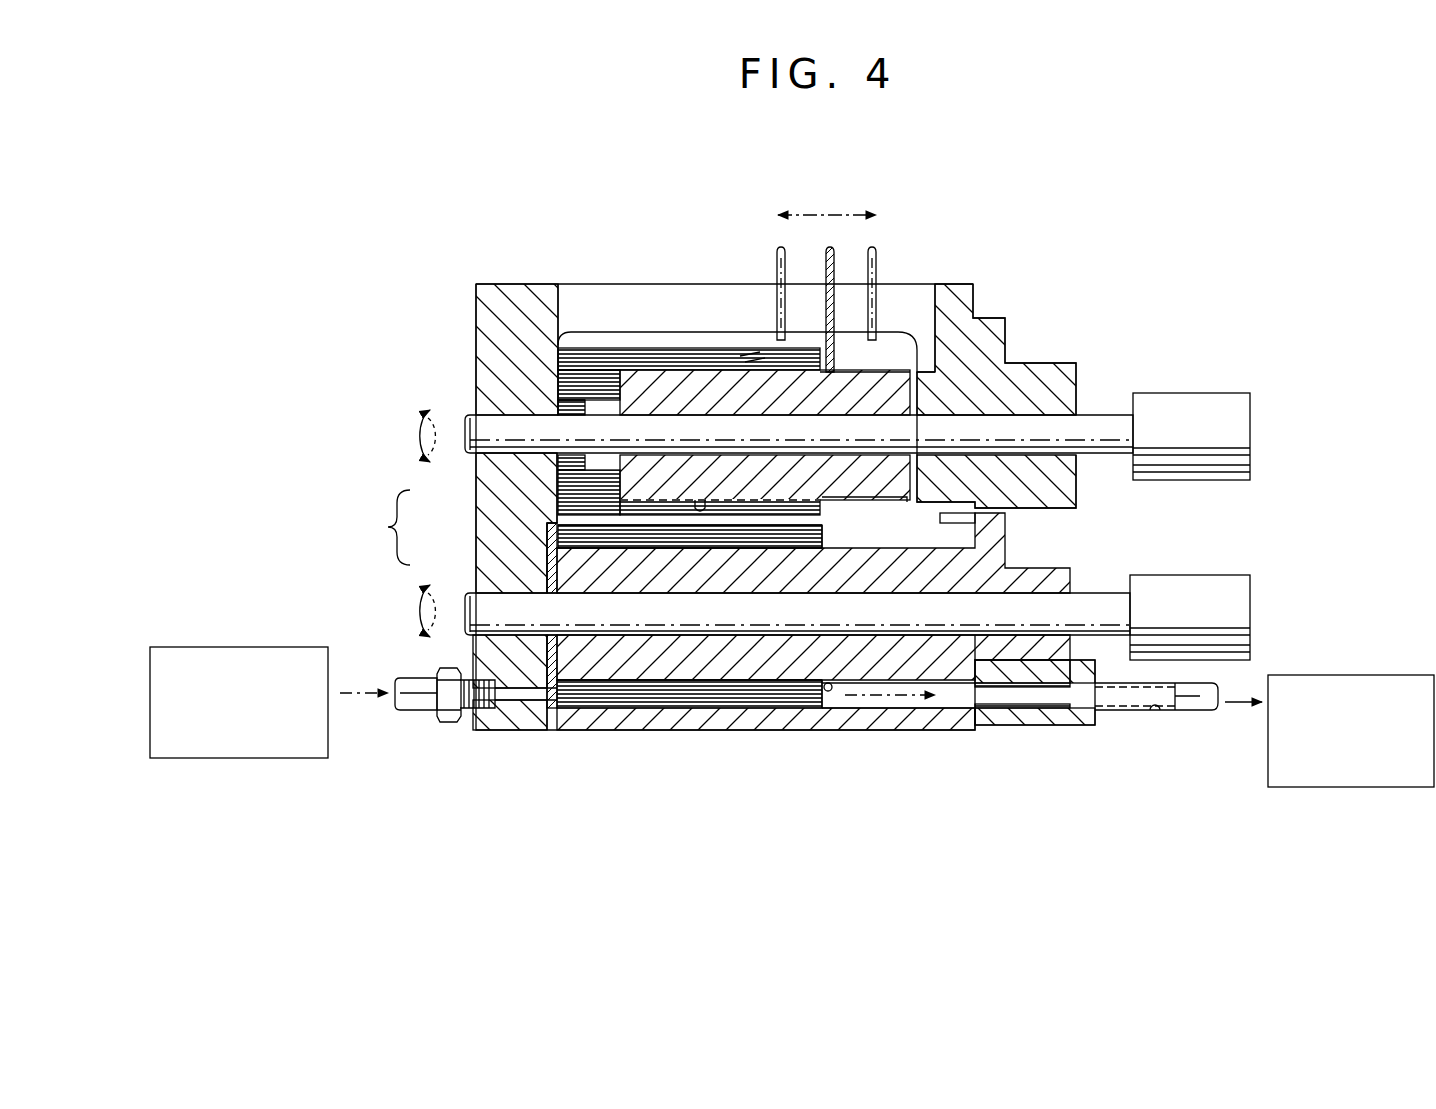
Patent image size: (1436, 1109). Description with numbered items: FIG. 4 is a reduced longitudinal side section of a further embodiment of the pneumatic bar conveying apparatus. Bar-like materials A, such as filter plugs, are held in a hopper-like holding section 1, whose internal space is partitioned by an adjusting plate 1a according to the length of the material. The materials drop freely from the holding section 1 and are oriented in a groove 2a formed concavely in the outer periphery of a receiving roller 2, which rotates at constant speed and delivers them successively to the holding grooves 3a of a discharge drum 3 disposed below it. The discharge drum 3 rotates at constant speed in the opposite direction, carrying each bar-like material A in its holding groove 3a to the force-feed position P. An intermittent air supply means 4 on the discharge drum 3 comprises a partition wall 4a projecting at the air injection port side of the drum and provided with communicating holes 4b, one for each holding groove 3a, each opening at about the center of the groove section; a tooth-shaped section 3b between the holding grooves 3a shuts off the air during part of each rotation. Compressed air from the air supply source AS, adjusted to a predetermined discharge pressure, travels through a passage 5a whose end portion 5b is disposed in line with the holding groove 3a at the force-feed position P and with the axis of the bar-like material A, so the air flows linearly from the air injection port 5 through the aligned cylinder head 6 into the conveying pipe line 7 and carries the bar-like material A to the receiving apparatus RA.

The holding section 1 is at (653, 300).
The adjusting plate 1a is at (878, 263).
The receiving roller 2 is at (818, 362).
The groove 2a is at (680, 355).
The discharge drum 3 is at (945, 547).
The holding grooves 3a is at (838, 688).
The tooth-shaped section 3b is at (855, 545).
The intermittent air supply means 4 is at (387, 527).
The partition wall 4a is at (552, 525).
The communicating holes 4b is at (550, 536).
The air injection port 5 is at (563, 708).
The passage 5a is at (405, 710).
The end portion 5b is at (458, 724).
The cylinder head 6 is at (985, 722).
The conveying pipe line 7 is at (1152, 712).
The bar-like material A is at (592, 352).
The force-feed position P is at (826, 712).
The air supply source AS is at (222, 745).
The receiving apparatus RA is at (1318, 775).